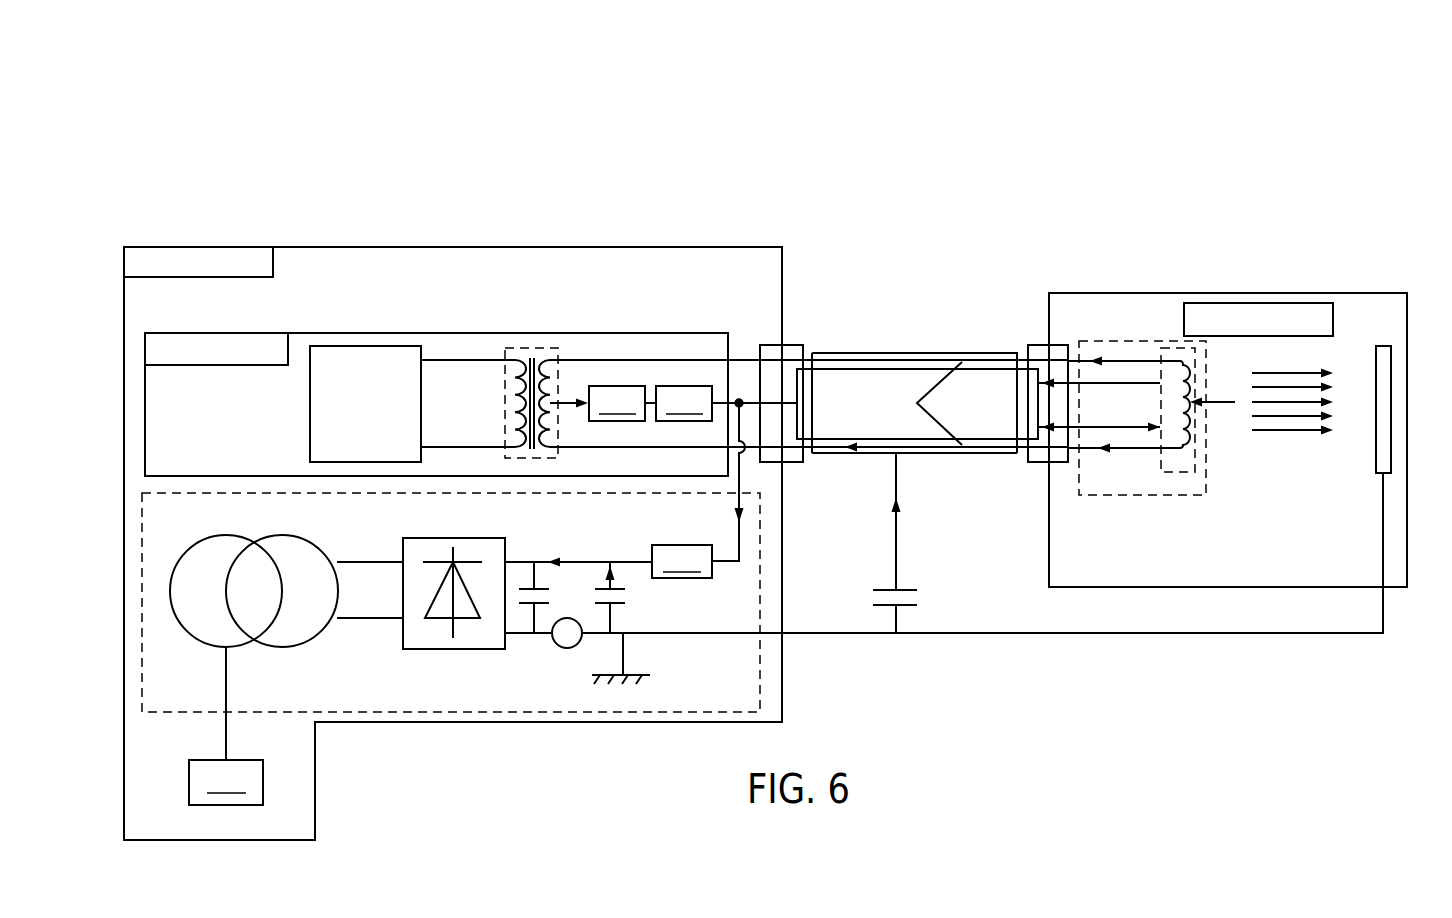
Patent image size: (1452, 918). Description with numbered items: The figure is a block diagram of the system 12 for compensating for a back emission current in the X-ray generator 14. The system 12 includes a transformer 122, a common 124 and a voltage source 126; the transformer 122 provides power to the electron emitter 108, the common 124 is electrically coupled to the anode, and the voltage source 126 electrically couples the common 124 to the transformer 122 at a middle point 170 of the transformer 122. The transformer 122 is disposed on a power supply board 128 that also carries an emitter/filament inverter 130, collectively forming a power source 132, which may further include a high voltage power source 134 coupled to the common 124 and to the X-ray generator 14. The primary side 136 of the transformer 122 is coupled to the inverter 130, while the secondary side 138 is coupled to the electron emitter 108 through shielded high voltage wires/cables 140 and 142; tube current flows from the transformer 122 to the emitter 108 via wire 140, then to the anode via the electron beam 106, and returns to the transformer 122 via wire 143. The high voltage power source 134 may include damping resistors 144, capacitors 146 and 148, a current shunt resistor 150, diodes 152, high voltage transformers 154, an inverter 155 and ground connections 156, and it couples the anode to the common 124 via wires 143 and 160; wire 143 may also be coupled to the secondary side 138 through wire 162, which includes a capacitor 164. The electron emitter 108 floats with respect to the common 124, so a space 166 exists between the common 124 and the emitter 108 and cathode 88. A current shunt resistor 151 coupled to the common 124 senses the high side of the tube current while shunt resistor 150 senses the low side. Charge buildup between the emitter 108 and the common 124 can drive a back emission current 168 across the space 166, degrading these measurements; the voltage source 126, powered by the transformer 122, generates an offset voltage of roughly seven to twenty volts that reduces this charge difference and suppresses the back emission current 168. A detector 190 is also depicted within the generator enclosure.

The system 12 is at (1182, 148).
The X-ray generator 14 is at (1172, 293).
The cathode 88 is at (1100, 341).
The electron beam 106 is at (1300, 448).
The electron emitter 108 is at (1185, 430).
The transformer 122 is at (505, 392).
The common 124 is at (722, 400).
The voltage source 126 is at (622, 403).
The power supply board 128 is at (145, 403).
The emitter/filament inverter 130 is at (361, 346).
The power source 132 is at (325, 247).
The high voltage power source 134 is at (142, 580).
The primary side 136 is at (487, 350).
The secondary side 138 is at (576, 350).
The wire/cable 140 is at (880, 353).
The wire/cable 142 is at (985, 455).
The wire 143 is at (1028, 637).
The damping resistor 144 is at (682, 561).
The capacitor 146 is at (625, 596).
The capacitor 148 is at (547, 597).
The current shunt resistor 150 is at (567, 648).
The current shunt resistor 151 is at (684, 403).
The diode 152 is at (460, 538).
The high voltage transformer 154 is at (262, 660).
The inverter 155 is at (226, 782).
The ground connection 156 is at (623, 672).
The wire 160 is at (745, 452).
The wire 162 is at (896, 548).
The capacitor 164 is at (917, 600).
The space 166 is at (1132, 430).
The back emission current 168 is at (1126, 383).
The middle point 170 is at (543, 378).
The detector 190 is at (1392, 430).